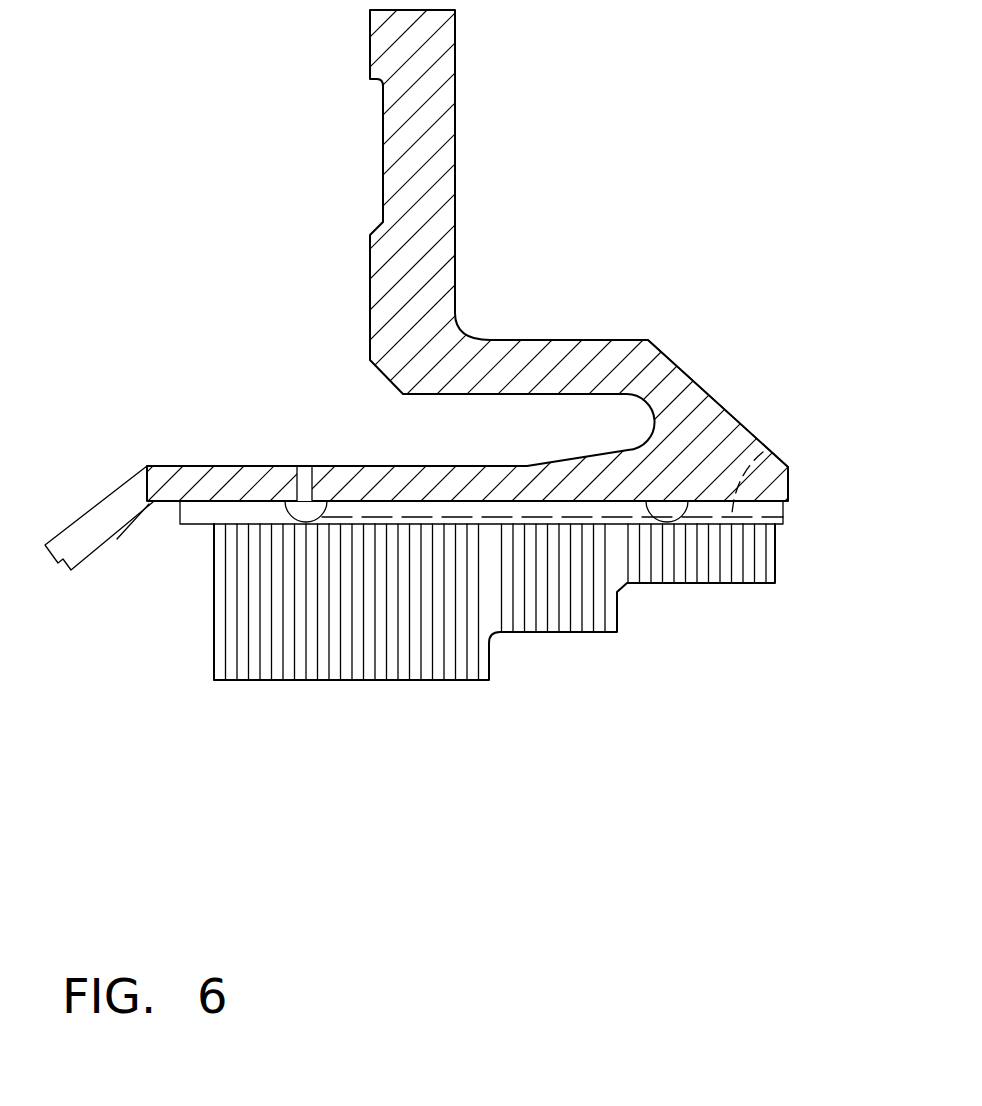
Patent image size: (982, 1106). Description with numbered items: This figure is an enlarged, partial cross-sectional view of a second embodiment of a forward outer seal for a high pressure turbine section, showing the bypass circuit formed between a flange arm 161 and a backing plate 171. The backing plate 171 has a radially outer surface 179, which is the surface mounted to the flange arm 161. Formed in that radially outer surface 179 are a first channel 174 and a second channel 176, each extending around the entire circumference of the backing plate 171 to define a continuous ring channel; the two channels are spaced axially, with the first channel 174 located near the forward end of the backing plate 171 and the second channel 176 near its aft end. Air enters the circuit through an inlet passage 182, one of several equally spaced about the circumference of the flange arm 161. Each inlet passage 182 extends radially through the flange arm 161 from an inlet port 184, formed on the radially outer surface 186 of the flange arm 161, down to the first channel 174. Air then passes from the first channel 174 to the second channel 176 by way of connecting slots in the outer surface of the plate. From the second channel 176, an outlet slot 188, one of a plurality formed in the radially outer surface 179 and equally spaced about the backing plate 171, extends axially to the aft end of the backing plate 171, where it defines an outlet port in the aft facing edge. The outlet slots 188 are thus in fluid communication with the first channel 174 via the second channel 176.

The flange arm 161 is at (183, 487).
The backing plate 171 is at (760, 512).
The first channel 174 is at (307, 515).
The second channel 176 is at (670, 515).
The radially outer surface 179 is at (205, 503).
The inlet passage 182 is at (305, 466).
The inlet port 184 is at (313, 466).
The radially outer surface 186 is at (402, 466).
The outlet slot 188 is at (773, 452).